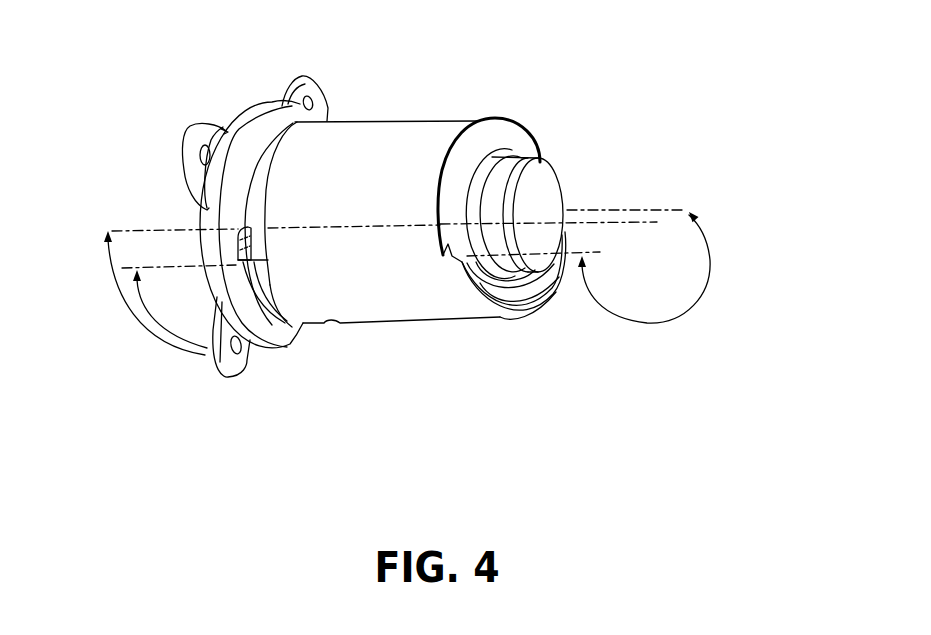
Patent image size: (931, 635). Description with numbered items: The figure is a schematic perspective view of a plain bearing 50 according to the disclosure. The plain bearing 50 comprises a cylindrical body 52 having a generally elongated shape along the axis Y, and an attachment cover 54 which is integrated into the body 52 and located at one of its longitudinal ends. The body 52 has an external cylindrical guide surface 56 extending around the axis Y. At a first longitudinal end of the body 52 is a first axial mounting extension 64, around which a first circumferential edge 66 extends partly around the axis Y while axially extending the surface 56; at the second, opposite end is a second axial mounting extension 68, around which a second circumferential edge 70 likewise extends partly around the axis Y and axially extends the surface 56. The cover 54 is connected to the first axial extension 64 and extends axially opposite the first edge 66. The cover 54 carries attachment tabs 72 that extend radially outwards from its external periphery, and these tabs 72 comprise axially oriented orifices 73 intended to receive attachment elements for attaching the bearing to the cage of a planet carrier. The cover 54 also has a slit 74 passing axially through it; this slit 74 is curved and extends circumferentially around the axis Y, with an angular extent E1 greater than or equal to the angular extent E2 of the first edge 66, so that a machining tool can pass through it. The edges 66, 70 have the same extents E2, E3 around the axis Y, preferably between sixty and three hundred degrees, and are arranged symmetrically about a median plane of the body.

The plain bearing 50 is at (584, 90).
The cylindrical body 52 is at (402, 185).
The attachment cover 54 is at (241, 97).
The external cylindrical guide surface 56 is at (377, 130).
The first axial mounting extension 64 is at (266, 212).
The first circumferential edge 66 is at (281, 300).
The second axial mounting extension 68 is at (542, 180).
The second circumferential edge 70 is at (530, 314).
The attachment tabs 72 is at (305, 78).
The axially oriented orifices 73 is at (316, 99).
The slit 74 is at (250, 298).
The axis Y is at (632, 222).
The angular extent of the slit E1 is at (118, 297).
The angular extent of the first edge E2 is at (152, 318).
The angular extent of the second edge E3 is at (713, 260).